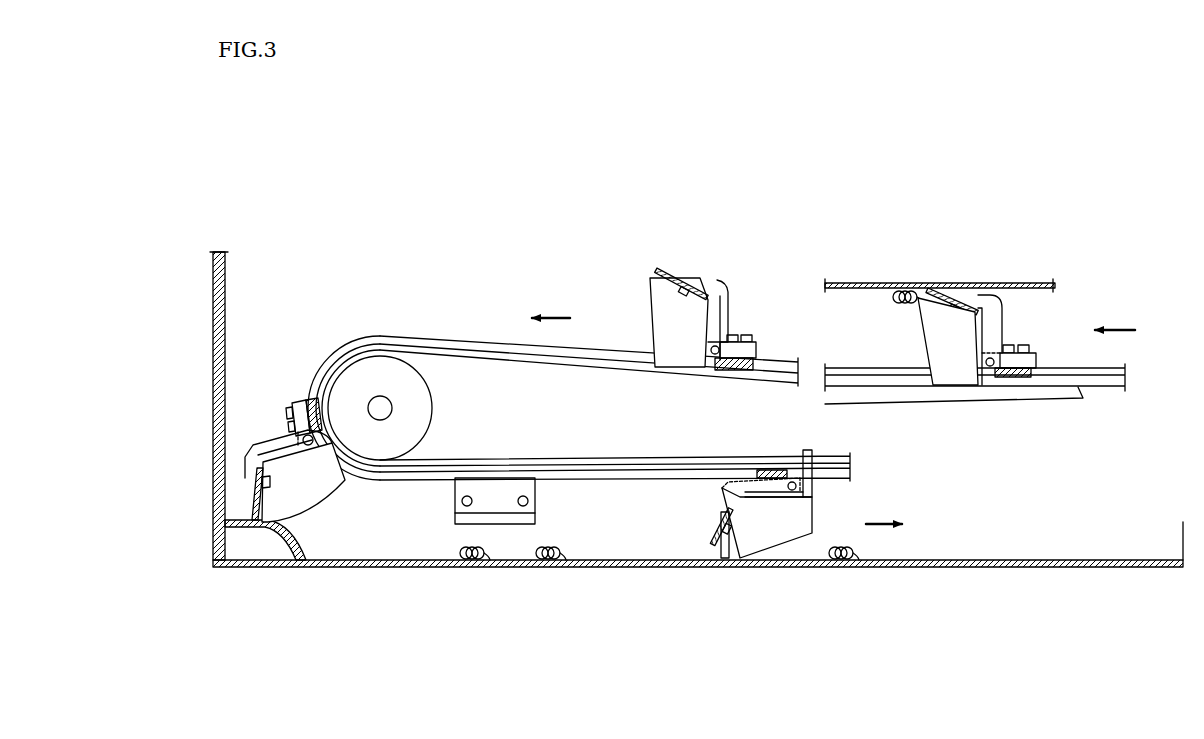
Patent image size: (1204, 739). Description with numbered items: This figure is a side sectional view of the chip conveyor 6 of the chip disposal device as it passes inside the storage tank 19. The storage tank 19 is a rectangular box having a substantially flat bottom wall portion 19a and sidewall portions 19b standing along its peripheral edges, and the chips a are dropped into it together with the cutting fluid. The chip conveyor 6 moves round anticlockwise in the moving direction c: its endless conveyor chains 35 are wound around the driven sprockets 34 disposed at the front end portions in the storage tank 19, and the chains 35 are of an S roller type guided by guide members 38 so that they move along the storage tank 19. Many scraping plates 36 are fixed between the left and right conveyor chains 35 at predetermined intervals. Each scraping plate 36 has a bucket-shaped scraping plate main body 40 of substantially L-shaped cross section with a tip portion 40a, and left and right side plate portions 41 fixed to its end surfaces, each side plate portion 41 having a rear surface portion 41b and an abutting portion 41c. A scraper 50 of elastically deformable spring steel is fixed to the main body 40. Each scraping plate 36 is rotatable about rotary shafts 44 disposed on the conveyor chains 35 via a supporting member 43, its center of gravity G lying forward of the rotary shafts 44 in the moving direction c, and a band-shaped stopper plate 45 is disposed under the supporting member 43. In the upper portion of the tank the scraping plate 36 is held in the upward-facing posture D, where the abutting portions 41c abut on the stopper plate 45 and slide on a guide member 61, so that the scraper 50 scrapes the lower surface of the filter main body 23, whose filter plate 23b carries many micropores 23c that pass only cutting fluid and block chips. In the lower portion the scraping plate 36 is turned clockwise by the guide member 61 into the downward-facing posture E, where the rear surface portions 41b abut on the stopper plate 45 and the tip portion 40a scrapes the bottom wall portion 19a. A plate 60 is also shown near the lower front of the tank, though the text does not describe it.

The chip conveyor 6 is at (463, 297).
The storage tank 19 is at (1100, 570).
The bottom wall portion 19a is at (990, 558).
The sidewall portion 19b is at (226, 311).
The filter main body 23 is at (1053, 282).
The filter plate 23b is at (1044, 272).
The micropores 23c is at (945, 284).
The driven sprocket 34 is at (434, 408).
The conveyor chain 35 is at (428, 330).
The scraping plate 36 is at (270, 430).
The guide member 38 is at (507, 525).
The scraping plate main body 40 is at (718, 316).
The tip portion 40a is at (723, 552).
The side plate portion 41 is at (703, 274).
The rear surface portion 41b is at (752, 470).
The abutting portion 41c is at (738, 370).
The supporting member 43 is at (752, 336).
The rotary shaft 44 is at (712, 356).
The stopper plate 45 is at (770, 352).
The scraper 50 is at (660, 270).
The guide plate 60 is at (306, 542).
The guide member 61 is at (1060, 405).
The center of gravity G is at (283, 485).
The chips a is at (474, 565).
The moving direction c is at (567, 317).
The upward-facing posture D is at (923, 386).
The downward-facing posture E is at (815, 562).